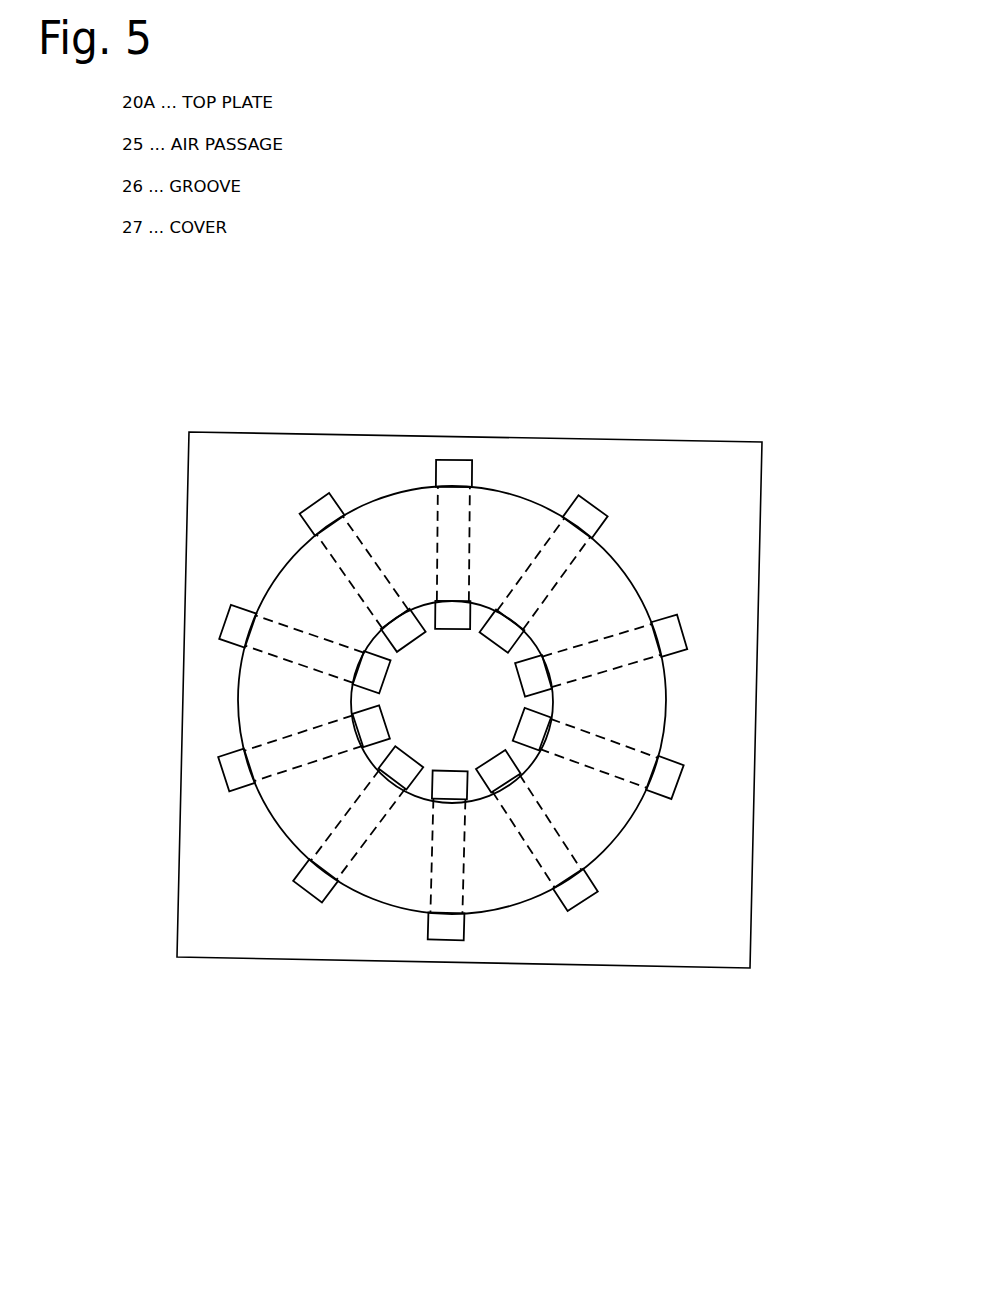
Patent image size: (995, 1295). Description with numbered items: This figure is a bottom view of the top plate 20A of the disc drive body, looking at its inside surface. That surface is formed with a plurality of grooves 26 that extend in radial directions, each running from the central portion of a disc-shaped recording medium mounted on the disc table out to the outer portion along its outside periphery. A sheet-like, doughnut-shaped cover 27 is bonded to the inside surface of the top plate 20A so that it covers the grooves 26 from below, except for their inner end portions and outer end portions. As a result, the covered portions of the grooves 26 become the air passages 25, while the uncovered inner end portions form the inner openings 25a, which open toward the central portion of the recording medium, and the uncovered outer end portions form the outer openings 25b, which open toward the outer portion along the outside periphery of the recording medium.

The top plate 20A is at (632, 455).
The air passage 25 is at (429, 764).
The inner opening 25a is at (505, 633).
The outer opening 25b is at (532, 707).
The groove 26 is at (440, 476).
The cover 27 is at (650, 710).